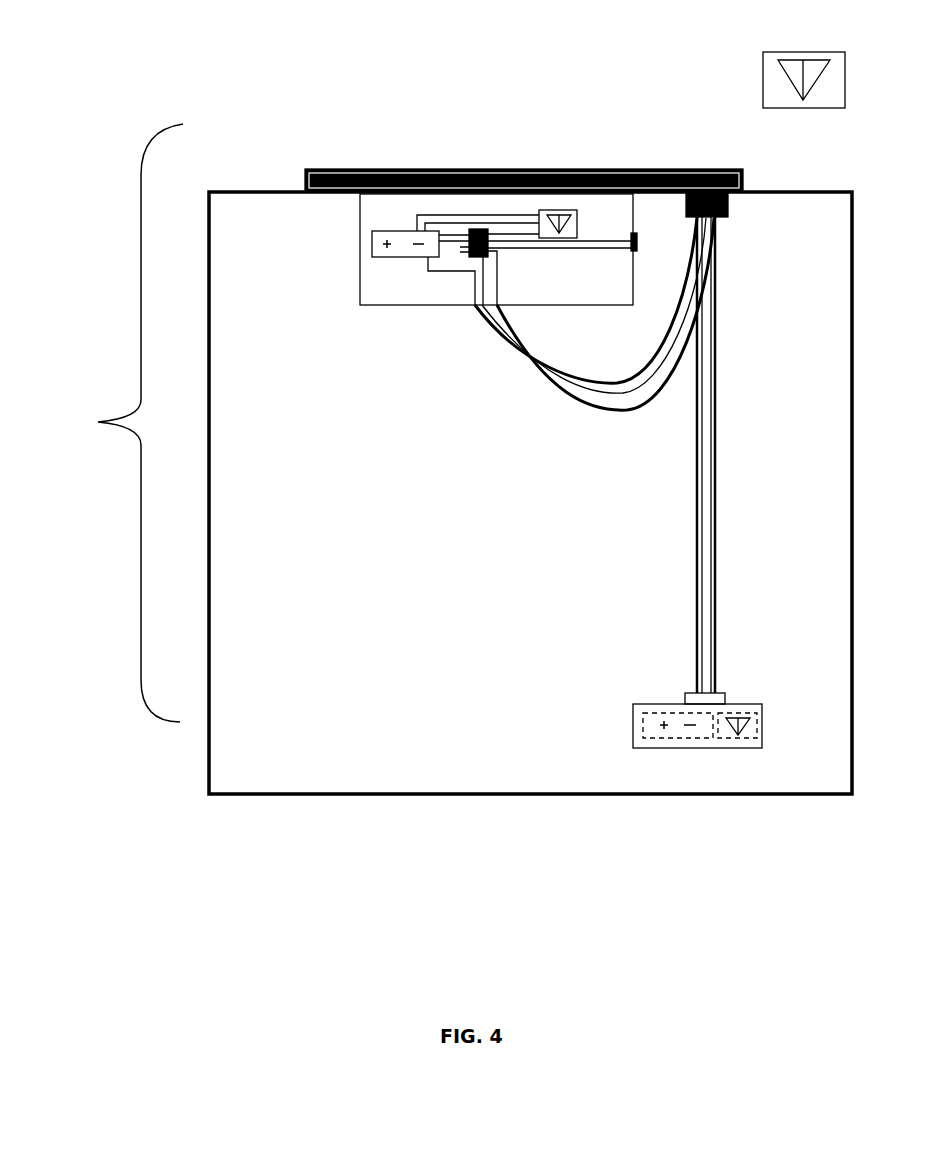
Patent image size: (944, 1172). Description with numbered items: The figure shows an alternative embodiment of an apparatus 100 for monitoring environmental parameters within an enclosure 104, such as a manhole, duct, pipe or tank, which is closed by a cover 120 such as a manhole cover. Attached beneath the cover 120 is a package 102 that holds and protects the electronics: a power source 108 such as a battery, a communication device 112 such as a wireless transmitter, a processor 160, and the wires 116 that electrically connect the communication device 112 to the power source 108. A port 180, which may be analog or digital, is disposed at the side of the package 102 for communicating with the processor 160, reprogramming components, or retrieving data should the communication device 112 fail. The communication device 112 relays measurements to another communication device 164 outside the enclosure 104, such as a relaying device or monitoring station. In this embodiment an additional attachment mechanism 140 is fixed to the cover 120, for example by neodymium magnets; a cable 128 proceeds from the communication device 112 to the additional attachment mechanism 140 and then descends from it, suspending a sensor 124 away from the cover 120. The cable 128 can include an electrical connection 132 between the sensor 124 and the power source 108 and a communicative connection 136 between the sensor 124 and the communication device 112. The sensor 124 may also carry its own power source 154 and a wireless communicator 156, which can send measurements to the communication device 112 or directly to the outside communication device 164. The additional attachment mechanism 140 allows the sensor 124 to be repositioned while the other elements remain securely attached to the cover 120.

The apparatus 100 is at (111, 423).
The package 102 is at (345, 288).
The enclosure 104 is at (290, 438).
The power source 108 is at (369, 238).
The communication device 112 is at (582, 223).
The wires 116 is at (488, 205).
The cover 120 is at (325, 175).
The sensor 124 is at (741, 701).
The cable 128 is at (723, 484).
The electrical connection 132 is at (696, 549).
The communicative connection 136 is at (714, 564).
The additional attachment mechanism 140 is at (730, 218).
The power source 154 is at (666, 745).
The wireless communicator 156 is at (742, 743).
The processor 160 is at (498, 250).
The communication device 164 is at (752, 92).
The port 180 is at (648, 229).